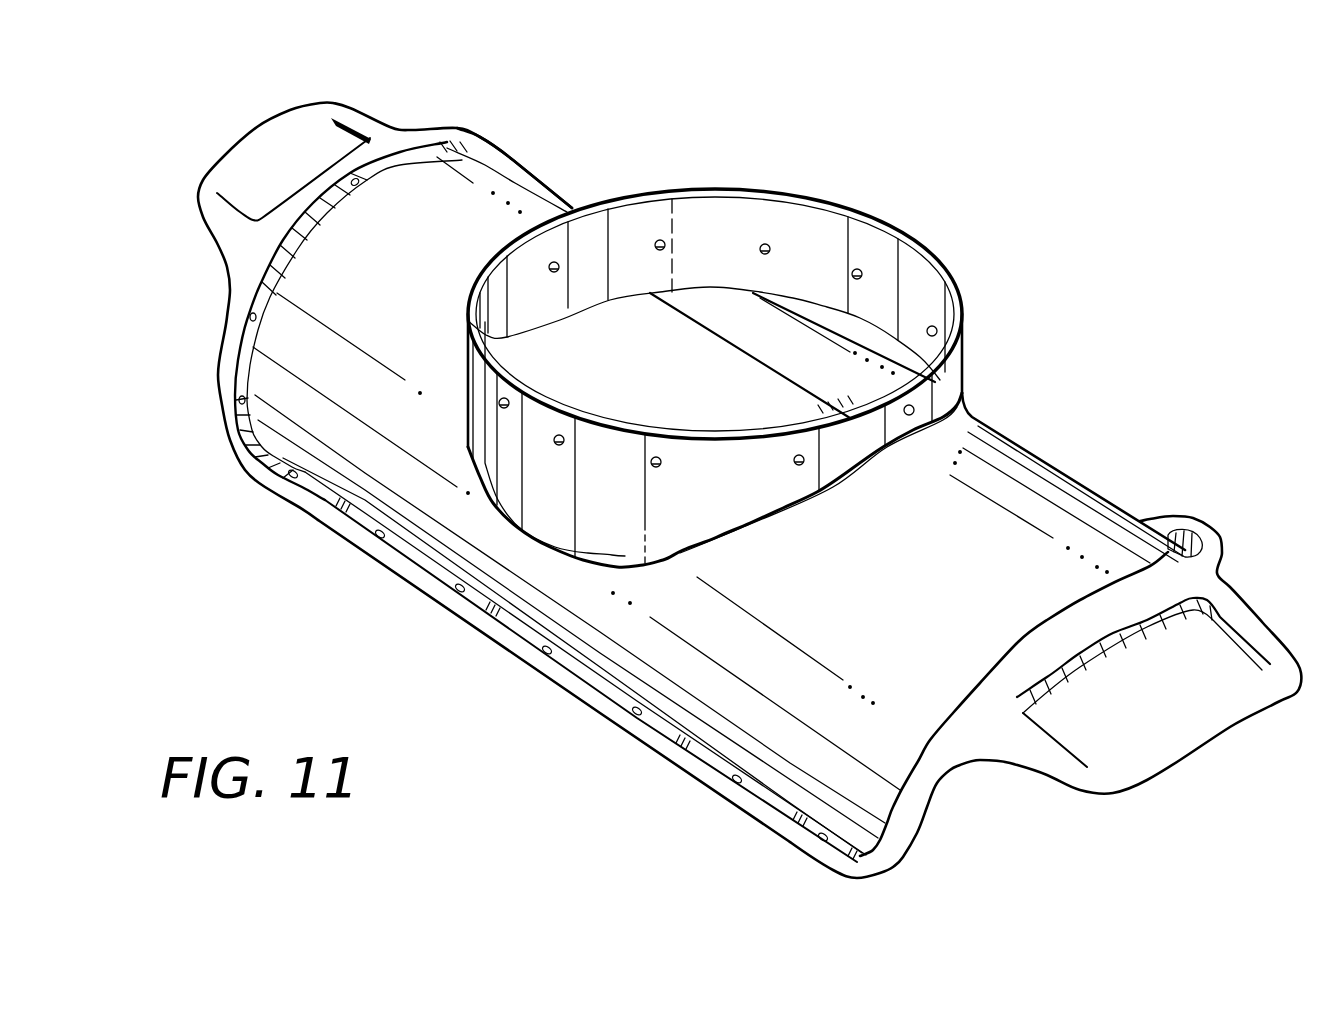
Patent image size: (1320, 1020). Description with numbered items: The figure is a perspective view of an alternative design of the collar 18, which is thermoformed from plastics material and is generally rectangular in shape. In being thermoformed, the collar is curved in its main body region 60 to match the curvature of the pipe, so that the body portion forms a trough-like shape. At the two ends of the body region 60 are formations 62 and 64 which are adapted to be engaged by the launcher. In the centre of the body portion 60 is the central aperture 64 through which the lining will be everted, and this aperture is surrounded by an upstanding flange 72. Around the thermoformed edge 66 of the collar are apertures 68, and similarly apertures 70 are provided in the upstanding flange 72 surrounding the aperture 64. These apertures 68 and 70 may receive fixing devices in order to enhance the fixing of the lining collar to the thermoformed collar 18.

The collar 18 is at (655, 765).
The main body region 60 is at (523, 203).
The formation 62 is at (366, 117).
The formation / central aperture 64 is at (1270, 630).
The thermoformed edge 66 is at (513, 660).
The apertures 68 is at (295, 470).
The apertures 70 is at (659, 240).
The upstanding flange 72 is at (907, 234).